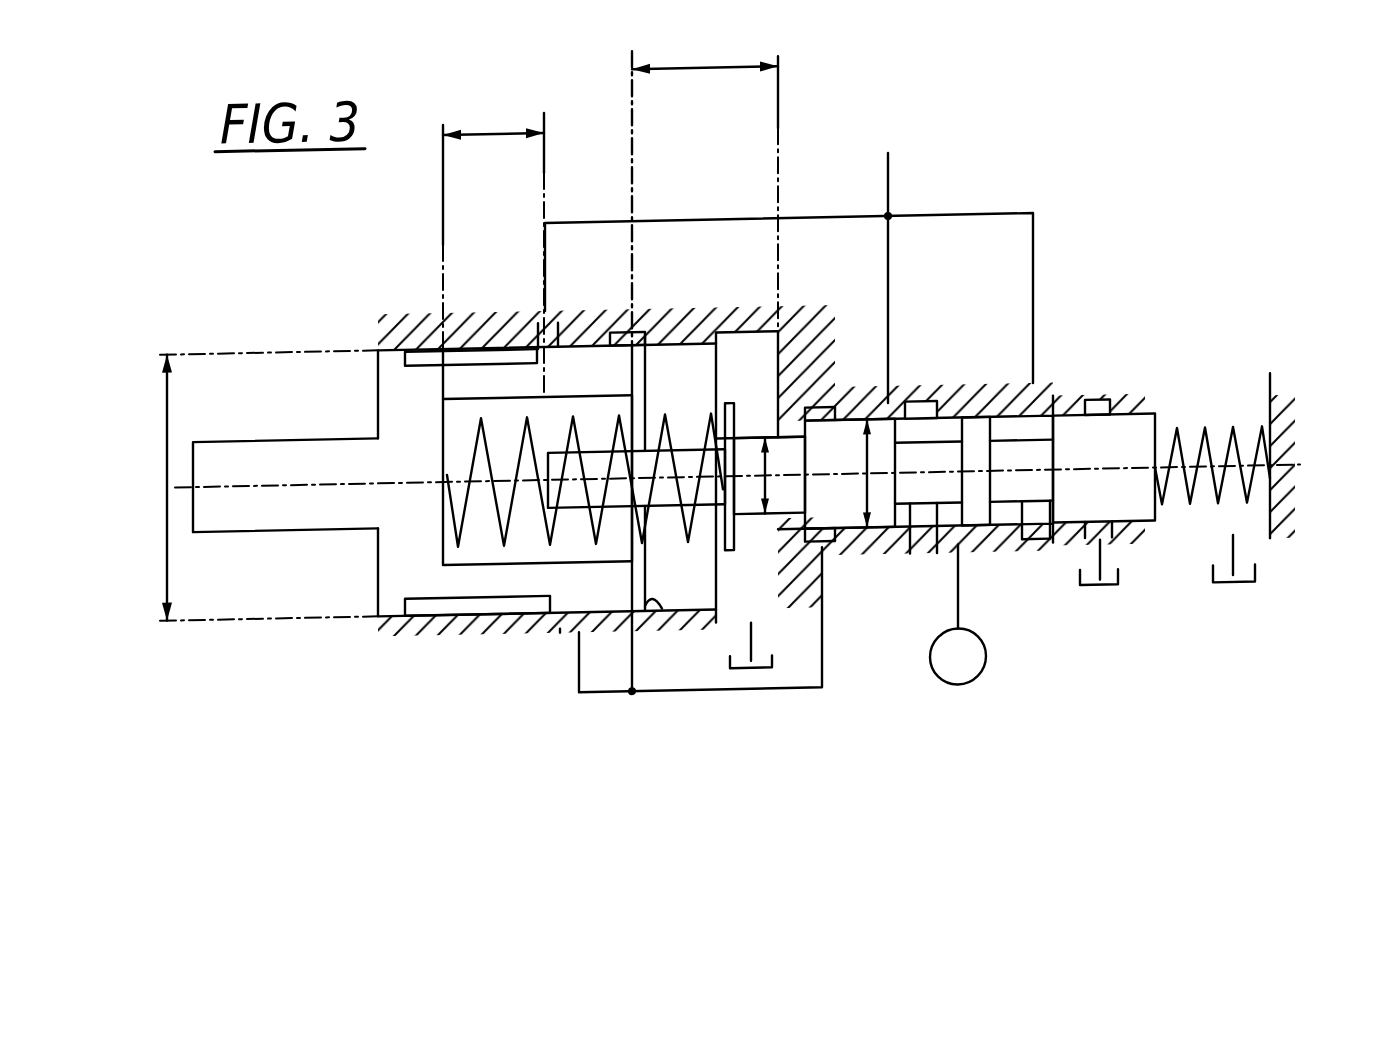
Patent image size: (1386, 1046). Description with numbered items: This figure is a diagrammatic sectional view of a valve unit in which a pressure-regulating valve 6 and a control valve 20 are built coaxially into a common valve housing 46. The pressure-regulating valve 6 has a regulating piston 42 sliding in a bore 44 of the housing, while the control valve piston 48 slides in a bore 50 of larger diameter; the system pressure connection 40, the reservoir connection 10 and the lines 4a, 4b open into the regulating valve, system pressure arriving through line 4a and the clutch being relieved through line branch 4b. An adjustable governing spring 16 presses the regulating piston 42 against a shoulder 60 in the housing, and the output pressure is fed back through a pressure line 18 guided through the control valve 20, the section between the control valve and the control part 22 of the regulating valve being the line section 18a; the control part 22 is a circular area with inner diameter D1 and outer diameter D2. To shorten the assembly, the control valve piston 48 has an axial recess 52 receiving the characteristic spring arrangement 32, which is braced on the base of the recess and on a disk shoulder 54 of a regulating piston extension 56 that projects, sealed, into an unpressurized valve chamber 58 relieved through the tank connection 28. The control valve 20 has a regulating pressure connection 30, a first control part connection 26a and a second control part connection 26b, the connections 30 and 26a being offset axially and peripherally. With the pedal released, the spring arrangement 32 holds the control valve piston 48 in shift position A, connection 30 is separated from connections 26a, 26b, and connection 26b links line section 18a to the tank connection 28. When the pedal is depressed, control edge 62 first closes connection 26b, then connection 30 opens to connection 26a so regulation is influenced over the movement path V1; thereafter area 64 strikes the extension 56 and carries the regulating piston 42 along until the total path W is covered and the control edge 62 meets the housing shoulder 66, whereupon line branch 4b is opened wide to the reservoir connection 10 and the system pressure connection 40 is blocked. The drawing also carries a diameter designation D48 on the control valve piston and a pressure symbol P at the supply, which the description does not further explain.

The system pressure line 4a is at (890, 317).
The line branch 4b is at (1038, 298).
The pressure-regulating valve 6 is at (1078, 388).
The reservoir connection 10 is at (1093, 558).
The governing spring 16 is at (1207, 459).
The pressure line 18 is at (698, 230).
The line section 18a is at (732, 703).
The control valve 20 is at (441, 322).
The control part 22 is at (786, 452).
The first control part connection 26a is at (565, 636).
The second control part connection 26b is at (628, 633).
The reservoir connection 28 is at (740, 625).
The regulating pressure connection 30 is at (538, 326).
The characteristic spring arrangement 32 is at (495, 528).
The system pressure connection 40 is at (960, 614).
The regulating piston 42 is at (945, 510).
The bore 44 is at (945, 528).
The valve housing 46 is at (707, 332).
The control valve piston 48 is at (404, 506).
The bore 50 is at (487, 599).
The axial recess 52 is at (530, 554).
The disk shoulder 54 is at (732, 414).
The regulating piston extension 56 is at (742, 526).
The unpressurized valve chamber 58 is at (700, 605).
The shoulder 60 is at (772, 579).
The control edge 62 is at (660, 605).
The area 64 is at (440, 428).
The housing shoulder 66 is at (752, 526).
The shift position A is at (900, 267).
The inner diameter D1 is at (782, 475).
The outer diameter D2 is at (850, 474).
The diameter of piston rod 48 D48 is at (167, 488).
The movement path V1 is at (502, 140).
The total path W is at (720, 79).
The pressure source P is at (958, 614).